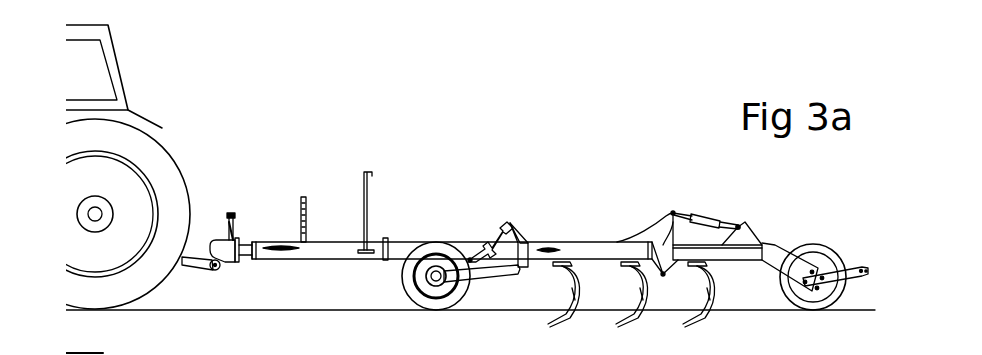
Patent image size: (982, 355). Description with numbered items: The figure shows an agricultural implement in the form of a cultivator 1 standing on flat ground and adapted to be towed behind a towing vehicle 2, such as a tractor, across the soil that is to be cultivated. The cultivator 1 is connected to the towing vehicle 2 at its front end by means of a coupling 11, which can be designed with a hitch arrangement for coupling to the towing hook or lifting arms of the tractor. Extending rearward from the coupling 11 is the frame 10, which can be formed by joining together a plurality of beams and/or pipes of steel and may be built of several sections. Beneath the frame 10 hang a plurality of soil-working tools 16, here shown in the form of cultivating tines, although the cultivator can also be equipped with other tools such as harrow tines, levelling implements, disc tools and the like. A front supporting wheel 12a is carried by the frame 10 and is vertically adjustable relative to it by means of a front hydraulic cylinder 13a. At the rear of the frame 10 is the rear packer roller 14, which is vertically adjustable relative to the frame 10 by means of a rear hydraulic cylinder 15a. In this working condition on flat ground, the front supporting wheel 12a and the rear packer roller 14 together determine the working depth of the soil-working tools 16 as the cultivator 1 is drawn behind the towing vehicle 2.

The cultivator 1 is at (398, 121).
The towing vehicle 2 is at (177, 98).
The frame 10 is at (407, 239).
The coupling 11 is at (233, 222).
The front supporting wheel 12a is at (433, 241).
The front hydraulic cylinder 13a is at (487, 237).
The rear packer roller 14 is at (808, 253).
The rear hydraulic cylinder 15a is at (693, 211).
The soil-working tools 16 is at (708, 287).